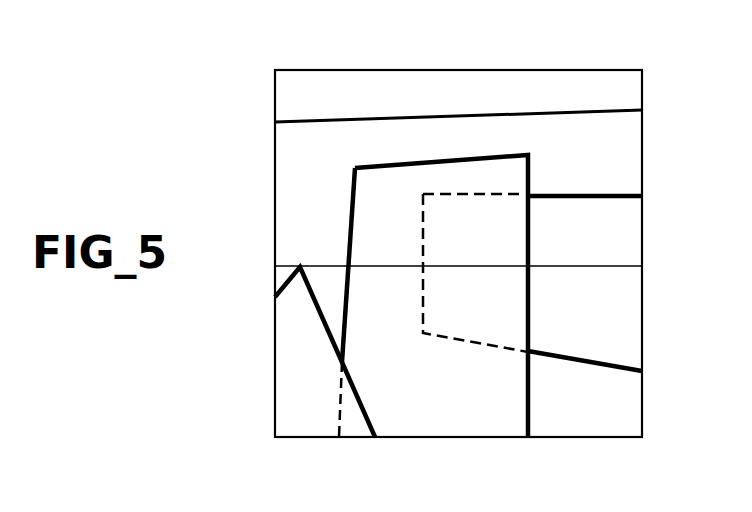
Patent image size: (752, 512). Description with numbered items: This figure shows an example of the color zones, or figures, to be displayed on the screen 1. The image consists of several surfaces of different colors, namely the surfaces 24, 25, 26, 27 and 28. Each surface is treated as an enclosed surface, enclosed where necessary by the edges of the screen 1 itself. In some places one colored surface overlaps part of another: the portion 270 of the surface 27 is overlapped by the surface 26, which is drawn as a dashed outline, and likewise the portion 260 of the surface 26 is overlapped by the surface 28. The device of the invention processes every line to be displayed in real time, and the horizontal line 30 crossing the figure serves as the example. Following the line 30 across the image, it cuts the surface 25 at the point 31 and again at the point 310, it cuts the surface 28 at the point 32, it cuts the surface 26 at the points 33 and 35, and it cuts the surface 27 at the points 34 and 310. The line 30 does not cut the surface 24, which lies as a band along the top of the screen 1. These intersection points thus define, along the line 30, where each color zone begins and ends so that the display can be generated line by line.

The screen 1 is at (650, 146).
The surface 24 is at (530, 87).
The surface 25 is at (322, 160).
The surface 26 is at (384, 200).
The surface 27 is at (554, 233).
The portion of the surface 27 270 is at (458, 229).
The surface 28 is at (295, 413).
The portion of the surface 26 260 is at (358, 424).
The line 30 is at (630, 260).
The point 310 is at (642, 266).
The point 31 is at (275, 266).
The point 32 is at (300, 265).
The point 33 is at (350, 266).
The point 34 is at (423, 268).
The point 35 is at (529, 270).